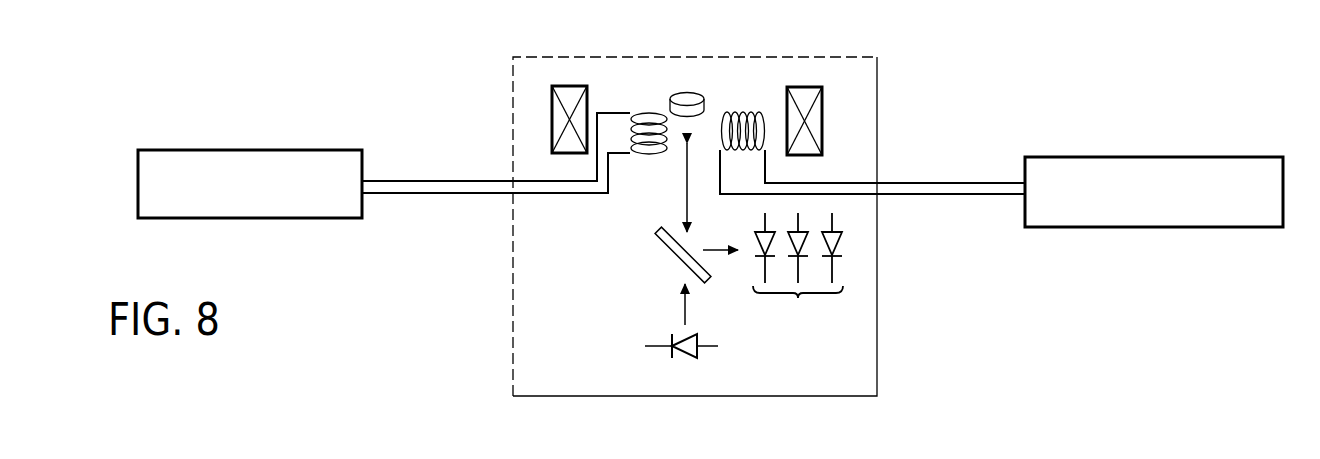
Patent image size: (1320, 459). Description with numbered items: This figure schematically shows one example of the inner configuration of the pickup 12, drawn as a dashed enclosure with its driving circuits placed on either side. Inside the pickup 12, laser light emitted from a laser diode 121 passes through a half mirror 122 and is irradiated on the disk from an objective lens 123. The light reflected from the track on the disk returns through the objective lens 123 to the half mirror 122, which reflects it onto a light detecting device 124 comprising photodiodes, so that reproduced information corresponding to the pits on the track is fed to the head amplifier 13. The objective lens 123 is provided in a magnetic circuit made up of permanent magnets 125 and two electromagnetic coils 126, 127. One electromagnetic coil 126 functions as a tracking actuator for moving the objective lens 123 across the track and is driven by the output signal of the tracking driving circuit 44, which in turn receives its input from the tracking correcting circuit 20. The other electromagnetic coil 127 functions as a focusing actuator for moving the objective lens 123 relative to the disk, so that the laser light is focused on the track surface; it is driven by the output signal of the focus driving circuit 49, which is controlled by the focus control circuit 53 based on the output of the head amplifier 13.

The pickup 12 is at (940, 70).
The head amplifier 13 is at (799, 353).
The tracking correcting circuit 20 is at (1155, 155).
The tracking driving circuit 44 is at (1160, 229).
The focus driving circuit 49 is at (302, 220).
The focus control circuit 53 is at (248, 148).
The laser diode 121 is at (668, 336).
The half mirror 122 is at (665, 247).
The objective lens 123 is at (688, 88).
The light detecting device 124 is at (826, 297).
The permanent magnets 125 is at (552, 107).
The electromagnetic coil 126 is at (742, 110).
The electromagnetic coil 127 is at (648, 110).